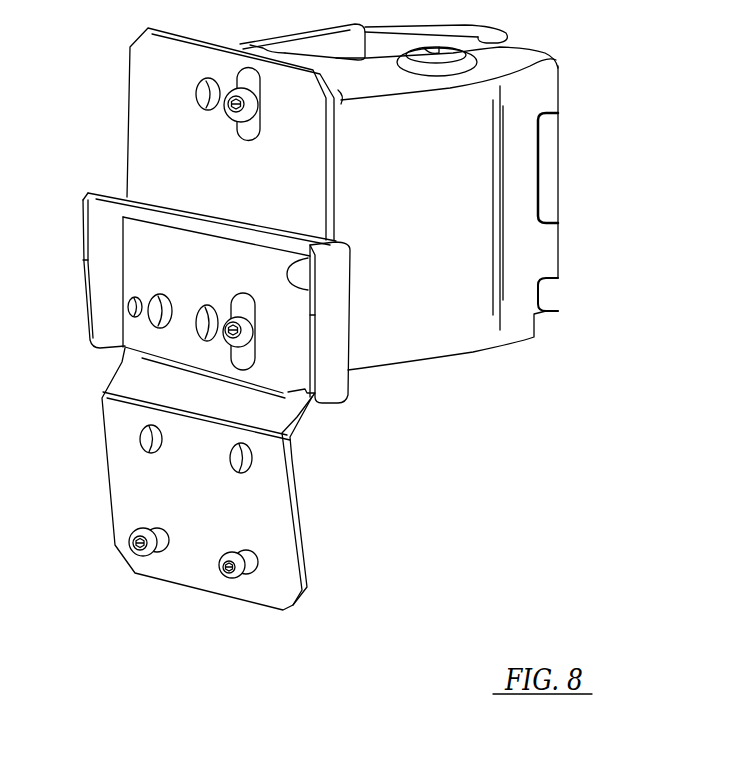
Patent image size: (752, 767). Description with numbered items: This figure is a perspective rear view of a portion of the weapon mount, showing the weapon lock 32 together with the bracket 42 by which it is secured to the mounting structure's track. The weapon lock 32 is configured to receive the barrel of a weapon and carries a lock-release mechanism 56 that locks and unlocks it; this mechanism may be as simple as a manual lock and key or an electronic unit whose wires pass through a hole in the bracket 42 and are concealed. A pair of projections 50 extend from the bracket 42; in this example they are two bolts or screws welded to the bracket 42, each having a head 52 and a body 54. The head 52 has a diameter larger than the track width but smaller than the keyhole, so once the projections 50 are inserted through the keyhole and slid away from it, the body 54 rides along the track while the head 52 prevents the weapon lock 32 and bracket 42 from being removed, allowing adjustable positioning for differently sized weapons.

The weapon lock 32 is at (553, 172).
The bracket 42 is at (273, 507).
The projections 50 is at (245, 570).
The head 52 is at (227, 563).
The body 54 is at (258, 558).
The lock-release mechanism 56 is at (514, 48).